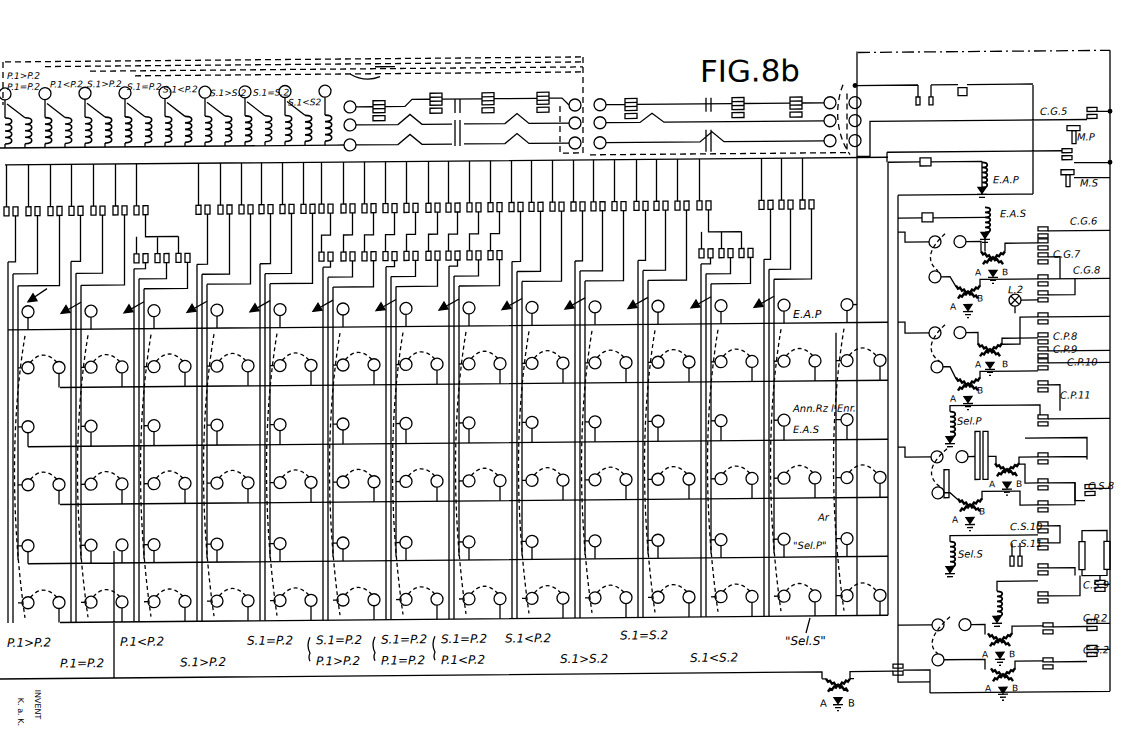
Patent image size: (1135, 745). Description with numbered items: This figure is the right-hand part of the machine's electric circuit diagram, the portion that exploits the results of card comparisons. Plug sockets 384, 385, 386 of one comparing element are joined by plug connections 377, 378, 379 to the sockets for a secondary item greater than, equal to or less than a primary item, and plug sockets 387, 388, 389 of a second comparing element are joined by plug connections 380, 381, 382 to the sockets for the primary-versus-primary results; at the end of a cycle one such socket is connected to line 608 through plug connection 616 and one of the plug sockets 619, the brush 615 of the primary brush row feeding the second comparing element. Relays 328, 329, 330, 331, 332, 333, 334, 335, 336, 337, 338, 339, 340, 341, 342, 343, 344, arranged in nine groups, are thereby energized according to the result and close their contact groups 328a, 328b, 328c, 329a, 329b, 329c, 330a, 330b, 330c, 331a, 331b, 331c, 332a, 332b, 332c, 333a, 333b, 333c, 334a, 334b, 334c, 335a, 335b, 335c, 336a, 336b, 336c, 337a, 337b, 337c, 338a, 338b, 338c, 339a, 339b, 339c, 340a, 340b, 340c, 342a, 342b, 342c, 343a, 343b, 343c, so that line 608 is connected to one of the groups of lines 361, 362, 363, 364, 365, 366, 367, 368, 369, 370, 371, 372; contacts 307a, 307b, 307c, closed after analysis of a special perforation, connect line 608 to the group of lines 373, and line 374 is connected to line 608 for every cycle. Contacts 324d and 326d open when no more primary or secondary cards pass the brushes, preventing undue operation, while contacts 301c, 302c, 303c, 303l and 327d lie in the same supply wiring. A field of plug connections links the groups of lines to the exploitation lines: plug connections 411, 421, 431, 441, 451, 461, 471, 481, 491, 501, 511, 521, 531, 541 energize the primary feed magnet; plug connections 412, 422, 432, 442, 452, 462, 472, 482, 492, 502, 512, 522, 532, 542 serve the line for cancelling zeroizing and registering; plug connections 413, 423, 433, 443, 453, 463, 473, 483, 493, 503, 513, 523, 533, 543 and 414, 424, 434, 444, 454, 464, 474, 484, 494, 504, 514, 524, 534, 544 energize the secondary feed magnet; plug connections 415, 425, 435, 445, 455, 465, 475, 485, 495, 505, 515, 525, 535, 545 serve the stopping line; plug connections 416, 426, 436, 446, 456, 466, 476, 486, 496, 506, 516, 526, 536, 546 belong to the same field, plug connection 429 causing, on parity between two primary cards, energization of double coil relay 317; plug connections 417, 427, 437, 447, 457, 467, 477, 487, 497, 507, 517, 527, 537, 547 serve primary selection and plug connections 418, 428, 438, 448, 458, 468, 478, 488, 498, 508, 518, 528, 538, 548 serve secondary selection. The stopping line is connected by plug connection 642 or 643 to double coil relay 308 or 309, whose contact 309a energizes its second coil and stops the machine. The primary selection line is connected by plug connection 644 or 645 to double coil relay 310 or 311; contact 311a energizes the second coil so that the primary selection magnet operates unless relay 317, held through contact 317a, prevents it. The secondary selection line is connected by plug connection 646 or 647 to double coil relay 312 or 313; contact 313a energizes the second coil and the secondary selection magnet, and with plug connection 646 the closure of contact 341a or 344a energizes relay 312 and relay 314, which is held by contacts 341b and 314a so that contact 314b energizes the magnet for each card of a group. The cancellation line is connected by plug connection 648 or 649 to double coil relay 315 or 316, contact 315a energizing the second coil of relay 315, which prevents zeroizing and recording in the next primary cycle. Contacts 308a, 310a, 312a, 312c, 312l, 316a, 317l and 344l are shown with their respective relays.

The contact 301c is at (926, 103).
The contact 302c is at (1051, 298).
The contact 303c is at (941, 225).
The contact 303l is at (935, 175).
The contact 307a is at (769, 208).
The contact 307b is at (784, 213).
The contact 307c is at (797, 218).
The double coil relay 308 is at (1009, 257).
The contact 308a is at (1060, 241).
The double coil relay 309 is at (984, 298).
The contact 309a is at (1074, 282).
The double coil relay 310 is at (1006, 346).
The contact 310a is at (1055, 323).
The double coil relay 311 is at (984, 390).
The contact 311a is at (1074, 369).
The double coil relay 312 is at (1015, 468).
The contact 312a is at (1056, 491).
The contact 312c is at (997, 560).
The contact 312l is at (1056, 451).
The double coil relay 313 is at (984, 511).
The contact 313a is at (1054, 501).
The relay 314 is at (999, 604).
The contact 314a is at (1041, 595).
The contact 314b is at (1052, 573).
The double coil relay 315 is at (1001, 646).
The contact 315a is at (1065, 631).
The double coil relay 316 is at (1001, 681).
The contact 316a is at (1065, 665).
The double coil relay 317 is at (825, 690).
The contact 317a is at (913, 673).
The contact 317l is at (1072, 426).
The contact 324d is at (150, 203).
The contact 326d is at (719, 204).
The contact 327d is at (967, 102).
The relay 328 is at (16, 141).
The contact 328a is at (14, 218).
The contact 328b is at (29, 219).
The contact 328c is at (43, 224).
The relay 329 is at (16, 103).
The contact 329a is at (328, 247).
The contact 329b is at (343, 251).
The contact 329c is at (356, 257).
The relay 330 is at (56, 140).
The contact 330a is at (79, 217).
The contact 330b is at (93, 218).
The contact 330c is at (107, 224).
The relay 331 is at (55, 102).
The contact 331a is at (392, 246).
The contact 331b is at (406, 251).
The contact 331c is at (420, 257).
The relay 332 is at (94, 140).
The contact 332a is at (141, 248).
The contact 332b is at (158, 253).
The contact 332c is at (169, 277).
The relay 333 is at (97, 102).
The contact 333a is at (455, 246).
The contact 333b is at (469, 250).
The contact 333c is at (482, 256).
The relay 334 is at (133, 140).
The contact 334a is at (206, 213).
The contact 334b is at (220, 218).
The contact 334c is at (233, 223).
The relay 335 is at (135, 102).
The contact 335a is at (269, 213).
The contact 335b is at (282, 217).
The contact 335c is at (295, 222).
The relay 336 is at (172, 139).
The contact 336a is at (329, 207).
The contact 336b is at (351, 207).
The contact 336c is at (372, 207).
The relay 337 is at (172, 101).
The contact 337a is at (393, 206).
The contact 337b is at (414, 206).
The contact 337c is at (436, 206).
The relay 338 is at (210, 101).
The contact 338a is at (456, 206).
The contact 338b is at (477, 206).
The contact 338c is at (498, 206).
The relay 339 is at (211, 139).
The contact 339a is at (519, 210).
The contact 339b is at (533, 215).
The contact 339c is at (546, 220).
The relay 340 is at (247, 124).
The contact 340a is at (581, 210).
The contact 340b is at (595, 215).
The contact 340c is at (608, 219).
The relay 341 is at (282, 139).
The contact 341a is at (996, 451).
The contact 341b is at (1085, 552).
The relay 342 is at (310, 123).
The contact 342a is at (644, 209).
The contact 342b is at (658, 214).
The contact 342c is at (671, 219).
The relay 343 is at (277, 100).
The contact 343a is at (707, 244).
The contact 343b is at (725, 233).
The contact 343c is at (735, 270).
The relay 344 is at (339, 150).
The contact 344a is at (939, 482).
The contact 344l is at (1092, 520).
The group of lines 361 is at (41, 301).
The group of lines 362 is at (44, 317).
The group of lines 363 is at (95, 316).
The group of lines 364 is at (158, 315).
The group of lines 365 is at (221, 315).
The group of lines 366 is at (284, 314).
The group of lines 367 is at (347, 314).
The group of lines 368 is at (410, 313).
The group of lines 369 is at (473, 313).
The group of lines 370 is at (536, 312).
The group of lines 371 is at (599, 311).
The group of lines 372 is at (662, 311).
The group of lines 373 is at (725, 310).
The line 374 is at (861, 310).
The plug connection 377 is at (365, 82).
The plug connection 378 is at (388, 75).
The plug connection 379 is at (359, 102).
The plug connection 380 is at (445, 72).
The plug connection 381 is at (486, 72).
The plug connection 382 is at (540, 70).
The plug socket 384 is at (401, 107).
The plug socket 385 is at (462, 130).
The plug socket 386 is at (398, 138).
The plug socket 387 is at (603, 103).
The plug socket 388 is at (612, 118).
The plug socket 389 is at (709, 128).
The plug connection 411 is at (30, 353).
The plug connection 412 is at (53, 364).
The plug connection 413 is at (31, 420).
The plug connection 414 is at (30, 471).
The plug connection 415 is at (53, 482).
The plug connection 416 is at (31, 537).
The plug connection 417 is at (30, 589).
The plug connection 418 is at (53, 600).
The plug connection 421 is at (93, 352).
The plug connection 422 is at (116, 364).
The plug connection 423 is at (94, 419).
The plug connection 424 is at (93, 470).
The plug connection 425 is at (116, 482).
The plug connection 426 is at (94, 536).
The plug connection 427 is at (93, 588).
The plug connection 428 is at (116, 600).
The plug connection 429 is at (111, 542).
The plug connection 431 is at (156, 352).
The plug connection 432 is at (179, 363).
The plug connection 433 is at (157, 419).
The plug connection 434 is at (156, 470).
The plug connection 435 is at (179, 481).
The plug connection 436 is at (157, 536).
The plug connection 437 is at (156, 588).
The plug connection 438 is at (179, 599).
The plug connection 441 is at (219, 351).
The plug connection 442 is at (242, 363).
The plug connection 443 is at (220, 418).
The plug connection 444 is at (219, 469).
The plug connection 445 is at (242, 481).
The plug connection 446 is at (220, 535).
The plug connection 447 is at (219, 587).
The plug connection 448 is at (242, 599).
The plug connection 451 is at (282, 350).
The plug connection 452 is at (305, 362).
The plug connection 453 is at (283, 417).
The plug connection 454 is at (282, 468).
The plug connection 455 is at (305, 480).
The plug connection 456 is at (283, 534).
The plug connection 457 is at (282, 586).
The plug connection 458 is at (305, 598).
The plug connection 461 is at (345, 350).
The plug connection 462 is at (368, 362).
The plug connection 463 is at (346, 417).
The plug connection 464 is at (345, 468).
The plug connection 465 is at (368, 480).
The plug connection 466 is at (346, 534).
The plug connection 467 is at (345, 586).
The plug connection 468 is at (368, 598).
The plug connection 471 is at (408, 349).
The plug connection 472 is at (431, 361).
The plug connection 473 is at (409, 416).
The plug connection 474 is at (408, 467).
The plug connection 475 is at (431, 479).
The plug connection 476 is at (409, 533).
The plug connection 477 is at (408, 585).
The plug connection 478 is at (431, 597).
The plug connection 481 is at (471, 349).
The plug connection 482 is at (494, 361).
The plug connection 483 is at (472, 416).
The plug connection 484 is at (471, 467).
The plug connection 485 is at (494, 479).
The plug connection 486 is at (472, 533).
The plug connection 487 is at (471, 585).
The plug connection 488 is at (494, 597).
The plug connection 491 is at (534, 348).
The plug connection 492 is at (557, 360).
The plug connection 493 is at (535, 415).
The plug connection 494 is at (534, 466).
The plug connection 495 is at (557, 478).
The plug connection 496 is at (535, 532).
The plug connection 497 is at (534, 584).
The plug connection 498 is at (557, 596).
The plug connection 501 is at (597, 348).
The plug connection 502 is at (620, 359).
The plug connection 503 is at (598, 415).
The plug connection 504 is at (597, 466).
The plug connection 505 is at (620, 477).
The plug connection 506 is at (598, 532).
The plug connection 507 is at (597, 584).
The plug connection 508 is at (620, 595).
The plug connection 511 is at (660, 347).
The plug connection 512 is at (683, 359).
The plug connection 513 is at (661, 414).
The plug connection 514 is at (660, 465).
The plug connection 515 is at (683, 477).
The plug connection 516 is at (661, 531).
The plug connection 517 is at (660, 583).
The plug connection 518 is at (683, 595).
The plug connection 521 is at (723, 347).
The plug connection 522 is at (746, 358).
The plug connection 523 is at (724, 414).
The plug connection 524 is at (723, 465).
The plug connection 525 is at (746, 476).
The plug connection 526 is at (724, 531).
The plug connection 527 is at (723, 583).
The plug connection 528 is at (746, 594).
The plug connection 531 is at (786, 346).
The plug connection 532 is at (809, 358).
The plug connection 533 is at (787, 413).
The plug connection 534 is at (786, 464).
The plug connection 535 is at (809, 476).
The plug connection 536 is at (787, 530).
The plug connection 537 is at (786, 582).
The plug connection 538 is at (809, 594).
The plug connection 541 is at (849, 345).
The plug connection 542 is at (874, 357).
The plug connection 543 is at (850, 412).
The plug connection 544 is at (849, 463).
The plug connection 545 is at (874, 475).
The plug connection 546 is at (847, 530).
The plug connection 547 is at (849, 581).
The plug connection 548 is at (874, 593).
The line 608 is at (1110, 88).
The brush 615 is at (830, 112).
The plug connection 616 is at (560, 152).
The plug sockets 619 is at (868, 333).
The plug connection 642 is at (939, 247).
The plug connection 643 is at (942, 272).
The plug connection 644 is at (938, 338).
The plug connection 645 is at (943, 365).
The plug connection 646 is at (936, 461).
The plug connection 647 is at (950, 491).
The plug connection 648 is at (941, 627).
The plug connection 649 is at (925, 655).